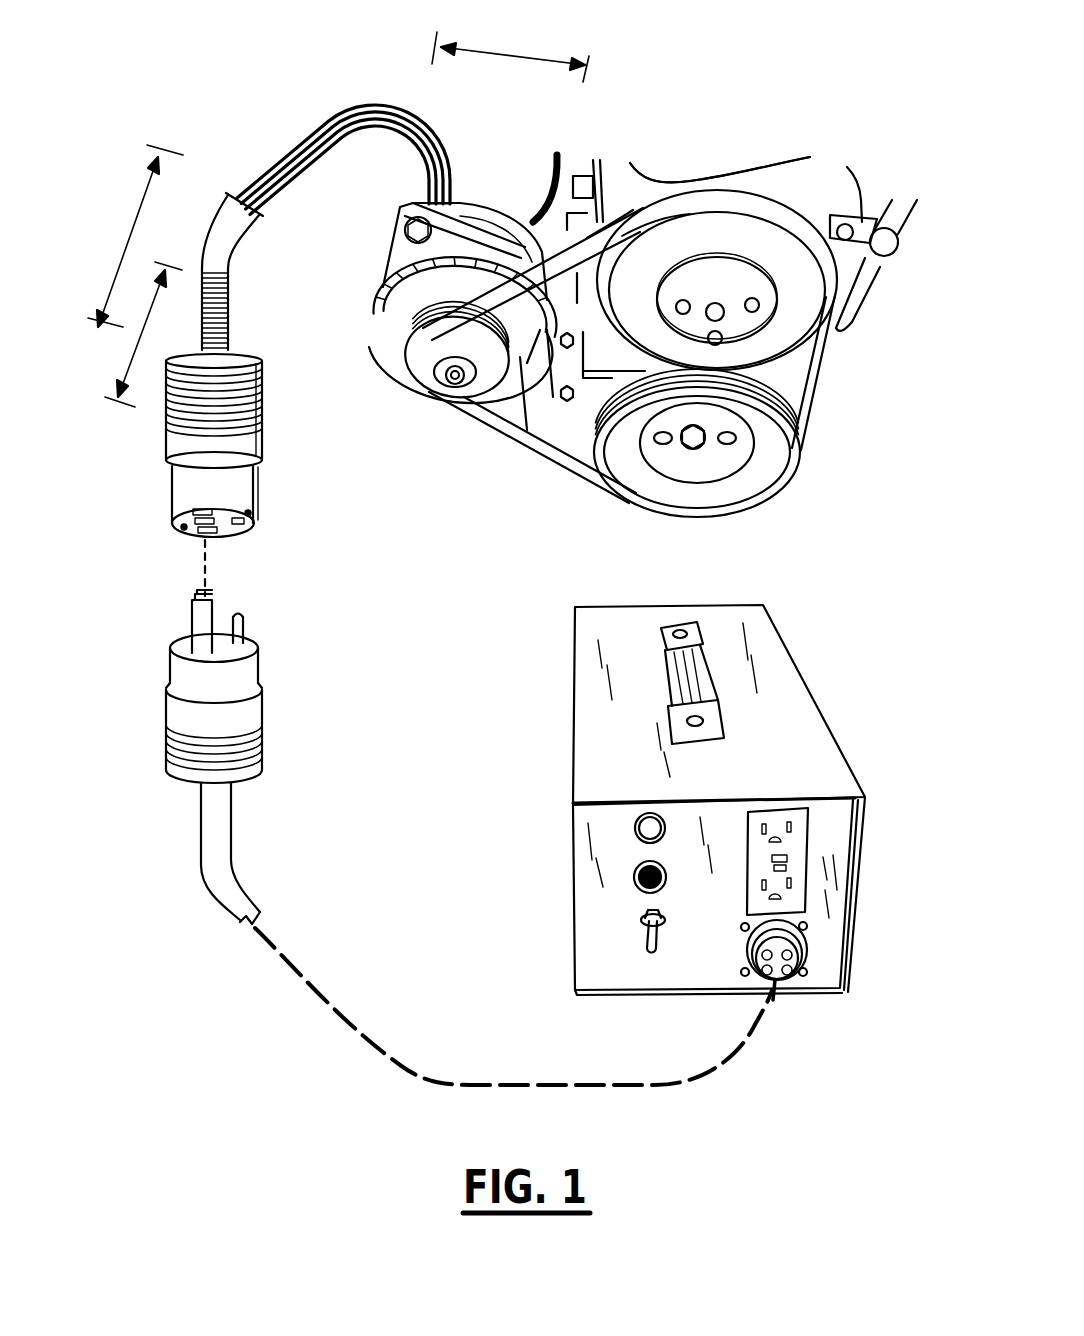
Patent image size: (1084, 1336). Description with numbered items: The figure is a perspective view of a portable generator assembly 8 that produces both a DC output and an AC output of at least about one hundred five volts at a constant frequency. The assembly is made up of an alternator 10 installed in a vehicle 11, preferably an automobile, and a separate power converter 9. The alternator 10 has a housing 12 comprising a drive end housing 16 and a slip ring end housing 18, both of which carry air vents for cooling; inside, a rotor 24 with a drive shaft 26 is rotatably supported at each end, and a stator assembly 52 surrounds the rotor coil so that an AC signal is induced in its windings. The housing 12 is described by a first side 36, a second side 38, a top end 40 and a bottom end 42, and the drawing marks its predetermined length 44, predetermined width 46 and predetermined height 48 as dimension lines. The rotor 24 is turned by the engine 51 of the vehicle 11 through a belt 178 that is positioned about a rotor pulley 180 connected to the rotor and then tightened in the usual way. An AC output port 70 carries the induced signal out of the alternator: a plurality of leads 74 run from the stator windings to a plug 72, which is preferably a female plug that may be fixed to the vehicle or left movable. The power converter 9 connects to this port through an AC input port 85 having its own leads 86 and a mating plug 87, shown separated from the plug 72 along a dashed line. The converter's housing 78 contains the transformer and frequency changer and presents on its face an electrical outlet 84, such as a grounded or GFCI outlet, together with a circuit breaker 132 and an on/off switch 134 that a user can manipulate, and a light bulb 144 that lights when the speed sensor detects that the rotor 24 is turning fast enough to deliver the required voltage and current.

The portable generator assembly 8 is at (651, 96).
The power converter 9 is at (827, 716).
The alternator 10 is at (380, 376).
The vehicle 11 is at (855, 186).
The housing 12 is at (388, 260).
The drive end housing 16 is at (368, 350).
The slip ring end housing 18 is at (472, 200).
The rotor 24 is at (433, 382).
The drive shaft 26 is at (456, 384).
The first side 36 is at (378, 307).
The second side 38 is at (445, 395).
The top end 40 is at (382, 283).
The bottom end 42 is at (500, 398).
The predetermined length 44 is at (125, 238).
The predetermined width 46 is at (128, 366).
The predetermined height 48 is at (518, 55).
The engine 51 is at (632, 165).
The stator assembly 52 is at (369, 319).
The AC output port 70 is at (315, 132).
The plug 72 is at (165, 502).
The leads 74 is at (353, 107).
The housing 78 is at (858, 907).
The electrical outlet 84 is at (800, 846).
The AC input port 85 is at (758, 1046).
The leads 86 is at (250, 905).
The plug 87 is at (265, 703).
The circuit breaker 132 is at (635, 824).
The on/off switch 134 is at (645, 940).
The light bulb 144 is at (634, 878).
The belt 178 is at (818, 394).
The rotor pulley 180 is at (466, 386).